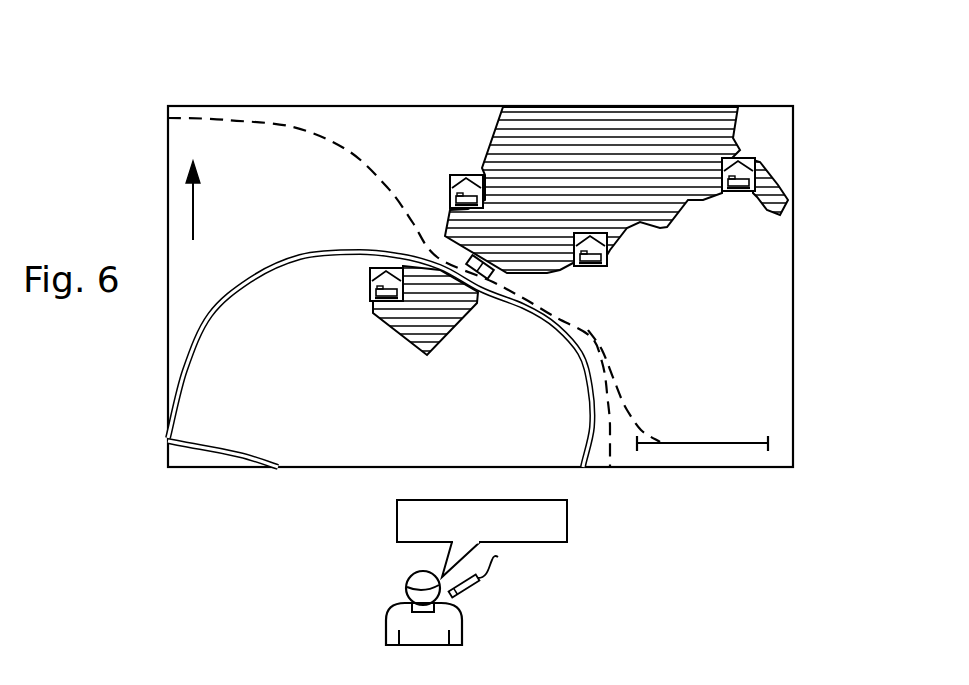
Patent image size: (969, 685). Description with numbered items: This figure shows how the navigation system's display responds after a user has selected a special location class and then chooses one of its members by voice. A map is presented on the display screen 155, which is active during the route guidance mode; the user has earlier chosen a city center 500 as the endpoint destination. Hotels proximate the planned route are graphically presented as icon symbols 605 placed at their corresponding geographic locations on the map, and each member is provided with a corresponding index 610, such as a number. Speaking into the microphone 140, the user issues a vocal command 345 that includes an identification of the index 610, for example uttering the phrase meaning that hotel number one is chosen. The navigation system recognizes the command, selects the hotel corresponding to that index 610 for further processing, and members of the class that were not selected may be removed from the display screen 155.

The display screen 155 is at (727, 484).
The icon symbols 605 is at (466, 175).
The index 610 is at (437, 185).
The city center 500 is at (493, 278).
The vocal command 345 is at (567, 540).
The microphone 140 is at (467, 590).